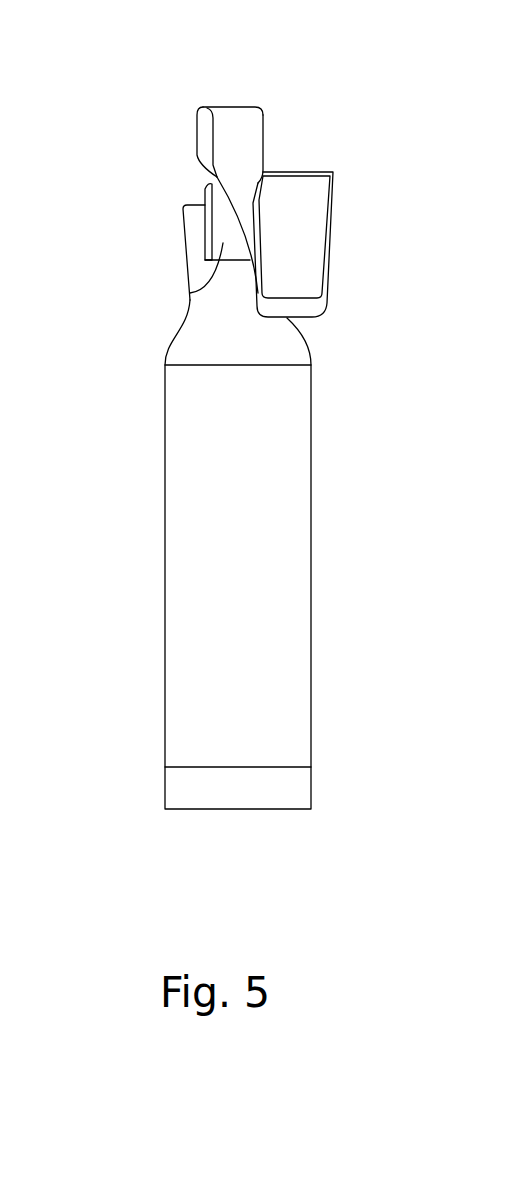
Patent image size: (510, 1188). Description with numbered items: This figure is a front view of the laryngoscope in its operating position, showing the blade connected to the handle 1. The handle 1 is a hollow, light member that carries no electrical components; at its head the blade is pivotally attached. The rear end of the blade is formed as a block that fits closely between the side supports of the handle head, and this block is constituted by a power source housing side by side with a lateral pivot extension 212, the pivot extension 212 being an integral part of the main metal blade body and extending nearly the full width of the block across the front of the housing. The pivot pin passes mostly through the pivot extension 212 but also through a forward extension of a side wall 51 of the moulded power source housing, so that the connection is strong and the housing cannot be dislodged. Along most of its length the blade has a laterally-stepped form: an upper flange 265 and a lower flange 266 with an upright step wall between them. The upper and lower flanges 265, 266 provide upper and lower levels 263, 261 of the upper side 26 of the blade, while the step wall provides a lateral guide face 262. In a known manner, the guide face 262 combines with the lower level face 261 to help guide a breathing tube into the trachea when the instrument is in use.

The handle 1 is at (145, 515).
The upper side 26 is at (271, 164).
The side wall of the power source housing 51 is at (200, 195).
The lateral pivot extension 212 is at (190, 293).
The lower level face 261 is at (335, 215).
The lateral guide face 262 is at (267, 135).
The upper level face 263 is at (243, 162).
The upper flange 265 is at (218, 88).
The lower flange 266 is at (333, 225).